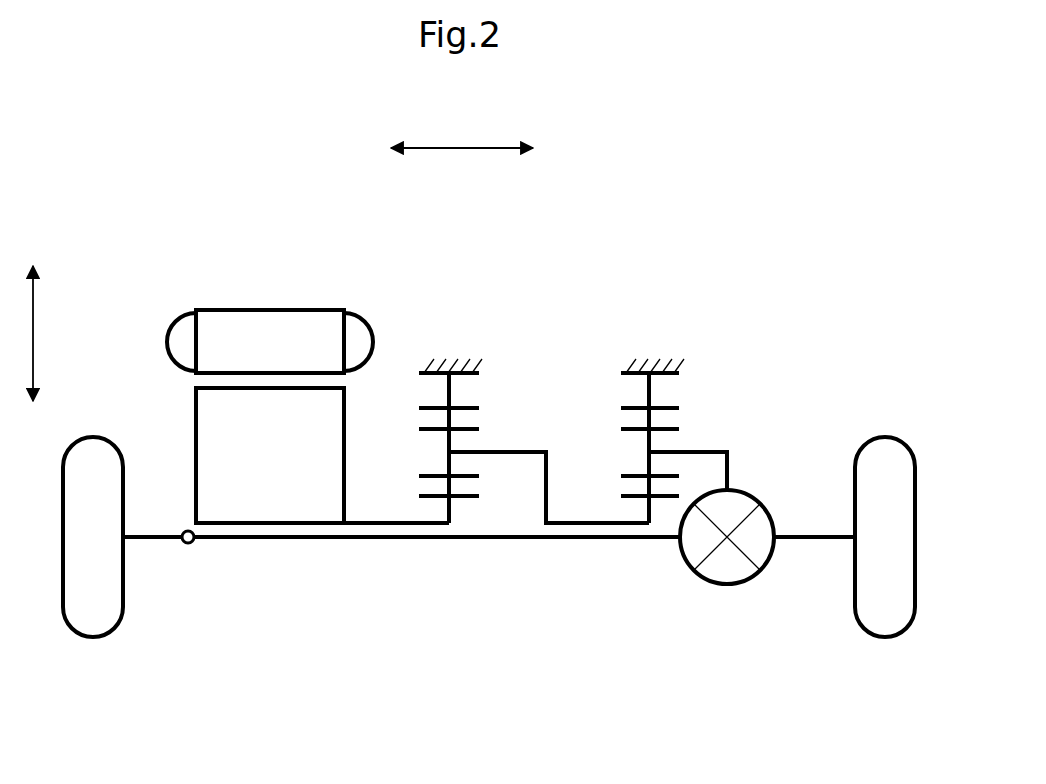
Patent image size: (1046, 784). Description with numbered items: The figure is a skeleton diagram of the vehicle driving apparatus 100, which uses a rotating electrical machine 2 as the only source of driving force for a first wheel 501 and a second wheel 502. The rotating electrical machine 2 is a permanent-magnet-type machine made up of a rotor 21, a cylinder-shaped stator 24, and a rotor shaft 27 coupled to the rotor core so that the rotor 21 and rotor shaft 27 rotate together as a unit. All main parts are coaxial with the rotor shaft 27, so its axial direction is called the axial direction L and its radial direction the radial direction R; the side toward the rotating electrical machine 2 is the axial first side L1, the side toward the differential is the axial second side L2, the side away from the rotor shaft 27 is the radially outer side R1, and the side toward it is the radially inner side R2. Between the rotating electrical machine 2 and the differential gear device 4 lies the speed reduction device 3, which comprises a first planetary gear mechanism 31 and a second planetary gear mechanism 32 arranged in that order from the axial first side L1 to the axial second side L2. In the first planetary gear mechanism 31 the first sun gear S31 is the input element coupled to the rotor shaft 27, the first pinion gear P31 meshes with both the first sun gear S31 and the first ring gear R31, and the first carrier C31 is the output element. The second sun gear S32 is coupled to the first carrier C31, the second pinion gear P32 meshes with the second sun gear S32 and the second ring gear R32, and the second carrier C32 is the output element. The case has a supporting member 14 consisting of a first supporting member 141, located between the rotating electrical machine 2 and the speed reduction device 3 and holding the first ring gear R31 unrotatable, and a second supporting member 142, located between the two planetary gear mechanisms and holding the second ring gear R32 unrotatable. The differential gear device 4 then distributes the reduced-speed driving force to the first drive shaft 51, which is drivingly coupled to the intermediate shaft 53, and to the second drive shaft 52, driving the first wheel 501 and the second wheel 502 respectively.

The vehicle driving apparatus 100 is at (797, 263).
The rotating electrical machine 2 is at (147, 313).
The rotor 21 is at (203, 442).
The stator 24 is at (270, 318).
The rotor shaft 27 is at (370, 520).
The speed reduction device 3 is at (585, 436).
The first planetary gear mechanism 31 is at (508, 366).
The second planetary gear mechanism 32 is at (708, 376).
The supporting member 14 is at (589, 312).
The first supporting member 141 is at (463, 362).
The second supporting member 142 is at (675, 362).
The first ring gear R31 is at (430, 403).
The first pinion gear P31 is at (430, 425).
The first sun gear S31 is at (465, 500).
The first carrier C31 is at (512, 450).
The second ring gear R32 is at (628, 405).
The second pinion gear P32 is at (667, 424).
The second sun gear S32 is at (663, 500).
The second carrier C32 is at (718, 450).
The differential gear device 4 is at (733, 572).
The first drive shaft 51 is at (153, 542).
The second drive shaft 52 is at (810, 542).
The intermediate shaft 53 is at (385, 542).
The first wheel 501 is at (93, 632).
The second wheel 502 is at (885, 622).
The radially outer side R1 is at (34, 239).
The radially inner side R2 is at (34, 436).
The radial direction R is at (20, 333).
The axial first side L1 is at (367, 151).
The axial second side L2 is at (560, 151).
The axial direction L is at (462, 132).